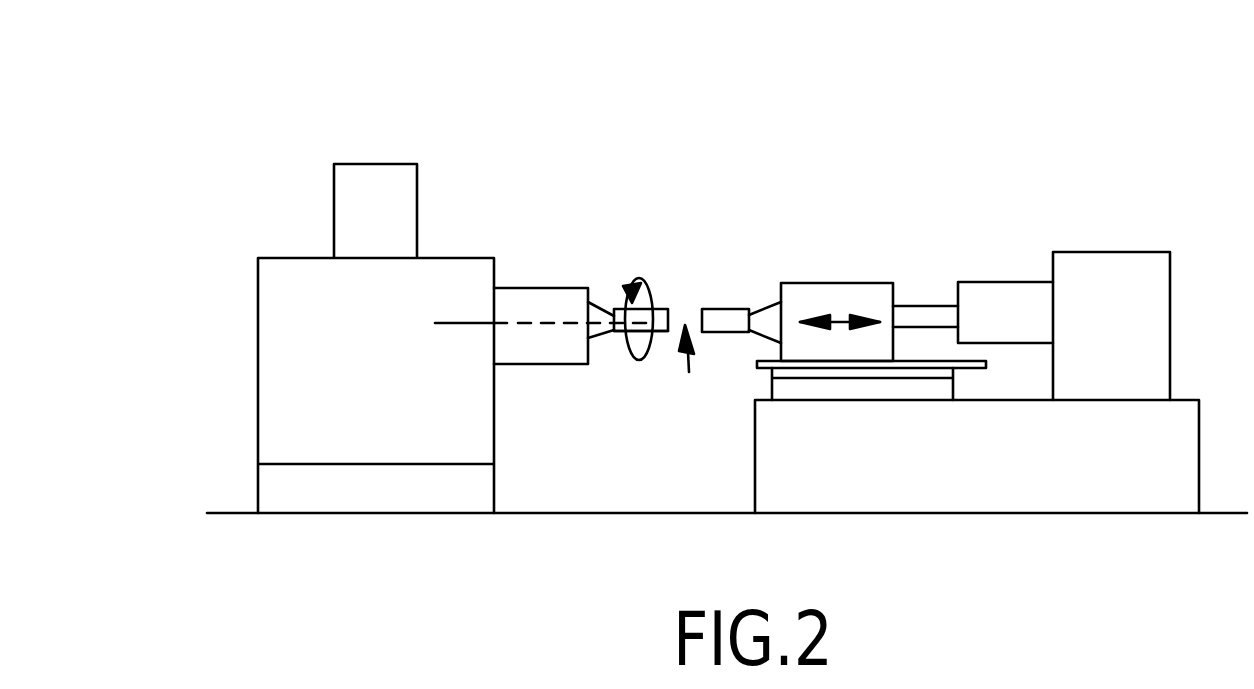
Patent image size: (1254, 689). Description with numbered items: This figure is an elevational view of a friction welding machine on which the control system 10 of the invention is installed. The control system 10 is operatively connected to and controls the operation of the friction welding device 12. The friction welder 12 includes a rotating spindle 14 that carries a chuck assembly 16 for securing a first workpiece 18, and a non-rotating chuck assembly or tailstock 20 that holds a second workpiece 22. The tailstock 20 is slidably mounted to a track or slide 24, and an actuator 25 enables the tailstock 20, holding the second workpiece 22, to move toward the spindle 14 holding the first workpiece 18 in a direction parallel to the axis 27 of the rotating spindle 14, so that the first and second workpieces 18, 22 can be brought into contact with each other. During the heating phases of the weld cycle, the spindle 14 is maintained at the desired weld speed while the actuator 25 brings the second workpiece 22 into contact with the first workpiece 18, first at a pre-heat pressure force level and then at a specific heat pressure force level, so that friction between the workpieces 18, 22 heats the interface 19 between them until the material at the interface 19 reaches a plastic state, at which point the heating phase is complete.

The control system 10 is at (418, 140).
The friction welding device 12 is at (905, 150).
The rotating spindle 14 is at (545, 288).
The chuck assembly 16 is at (603, 307).
The first workpiece 18 is at (623, 334).
The interface 19 is at (689, 372).
The tailstock 20 is at (855, 283).
The second workpiece 22 is at (733, 308).
The slide 24 is at (973, 368).
The actuator 25 is at (1000, 282).
The axis 27 is at (530, 323).